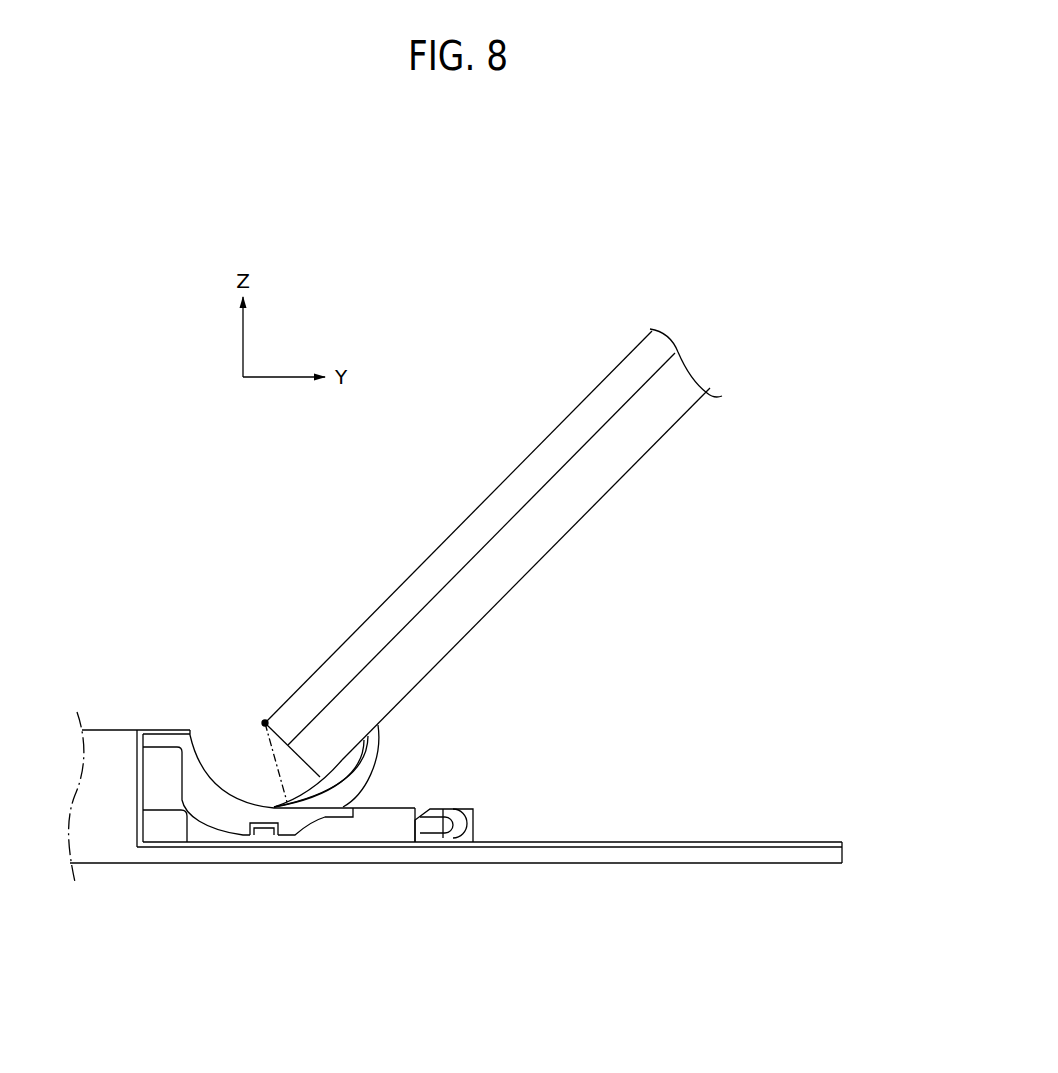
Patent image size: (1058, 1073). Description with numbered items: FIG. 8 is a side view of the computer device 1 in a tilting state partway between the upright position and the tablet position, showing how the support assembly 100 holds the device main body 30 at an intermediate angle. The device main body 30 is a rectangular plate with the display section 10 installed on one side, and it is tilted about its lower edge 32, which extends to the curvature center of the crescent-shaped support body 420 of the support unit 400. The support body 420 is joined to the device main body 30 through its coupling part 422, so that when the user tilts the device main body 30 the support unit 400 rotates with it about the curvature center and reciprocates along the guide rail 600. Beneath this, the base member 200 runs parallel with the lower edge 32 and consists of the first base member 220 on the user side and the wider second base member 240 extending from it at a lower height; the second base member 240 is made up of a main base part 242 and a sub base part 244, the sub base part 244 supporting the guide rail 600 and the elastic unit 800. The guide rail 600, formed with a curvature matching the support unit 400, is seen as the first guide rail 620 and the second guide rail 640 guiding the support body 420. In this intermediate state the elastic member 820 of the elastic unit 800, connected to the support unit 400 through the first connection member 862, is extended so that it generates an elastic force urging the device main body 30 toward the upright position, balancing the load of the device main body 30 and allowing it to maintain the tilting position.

The computer device 1 is at (670, 292).
The display section 10 is at (595, 400).
The device main body 30 is at (543, 493).
The lower edge 32 is at (288, 757).
The support assembly 100 is at (448, 733).
The base member 200 is at (205, 968).
The first base member 220 is at (105, 830).
The second base member 240 is at (249, 932).
The main base part 242 is at (163, 857).
The sub base part 244 is at (252, 838).
The support unit 400 is at (371, 747).
The support body 420 is at (368, 790).
The coupling part 422 is at (378, 730).
The guide rail 600 is at (128, 661).
The first guide rail 620 is at (152, 763).
The second guide rail 640 is at (186, 730).
The elastic unit 800 is at (468, 849).
The elastic member 820 is at (468, 808).
The first connection member 862 is at (428, 828).